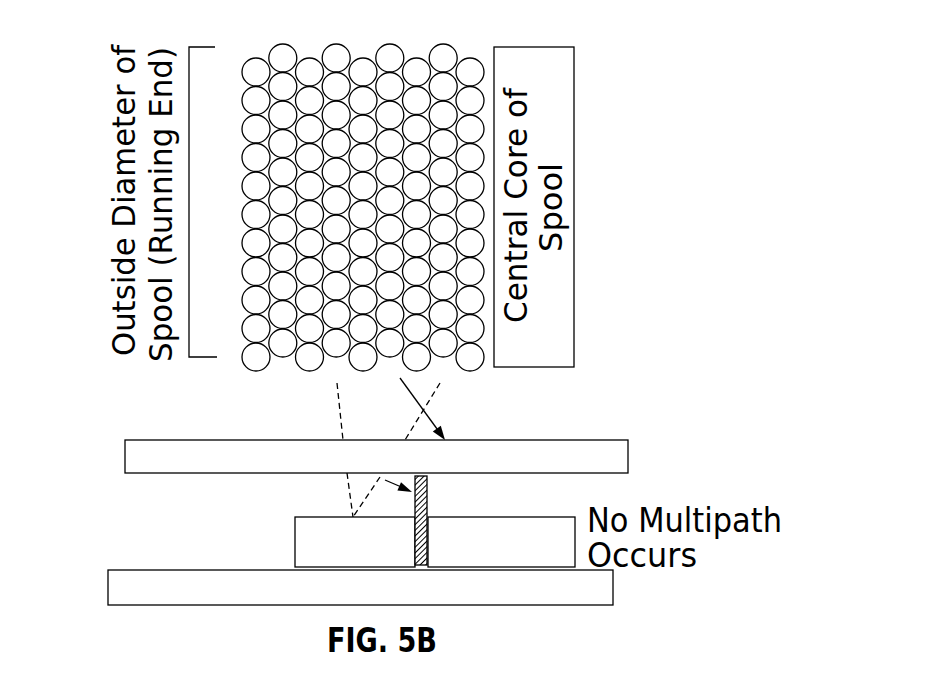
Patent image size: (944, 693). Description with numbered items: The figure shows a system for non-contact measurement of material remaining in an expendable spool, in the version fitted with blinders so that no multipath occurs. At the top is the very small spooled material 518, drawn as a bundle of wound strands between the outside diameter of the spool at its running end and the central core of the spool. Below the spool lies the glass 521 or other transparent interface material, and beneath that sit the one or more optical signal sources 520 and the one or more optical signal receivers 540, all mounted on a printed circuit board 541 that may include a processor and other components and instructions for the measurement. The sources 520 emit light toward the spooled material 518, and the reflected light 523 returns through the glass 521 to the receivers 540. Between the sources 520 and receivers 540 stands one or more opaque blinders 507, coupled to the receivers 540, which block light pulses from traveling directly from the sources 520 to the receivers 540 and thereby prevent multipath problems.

The very small spooled material 518 is at (386, 33).
The glass 521 is at (125, 457).
The reflected light 523 is at (435, 420).
The opaque blinders 507 is at (430, 510).
The optical signal receivers 540 is at (512, 517).
The optical signal sources 520 is at (295, 542).
The printed circuit board 541 is at (108, 587).